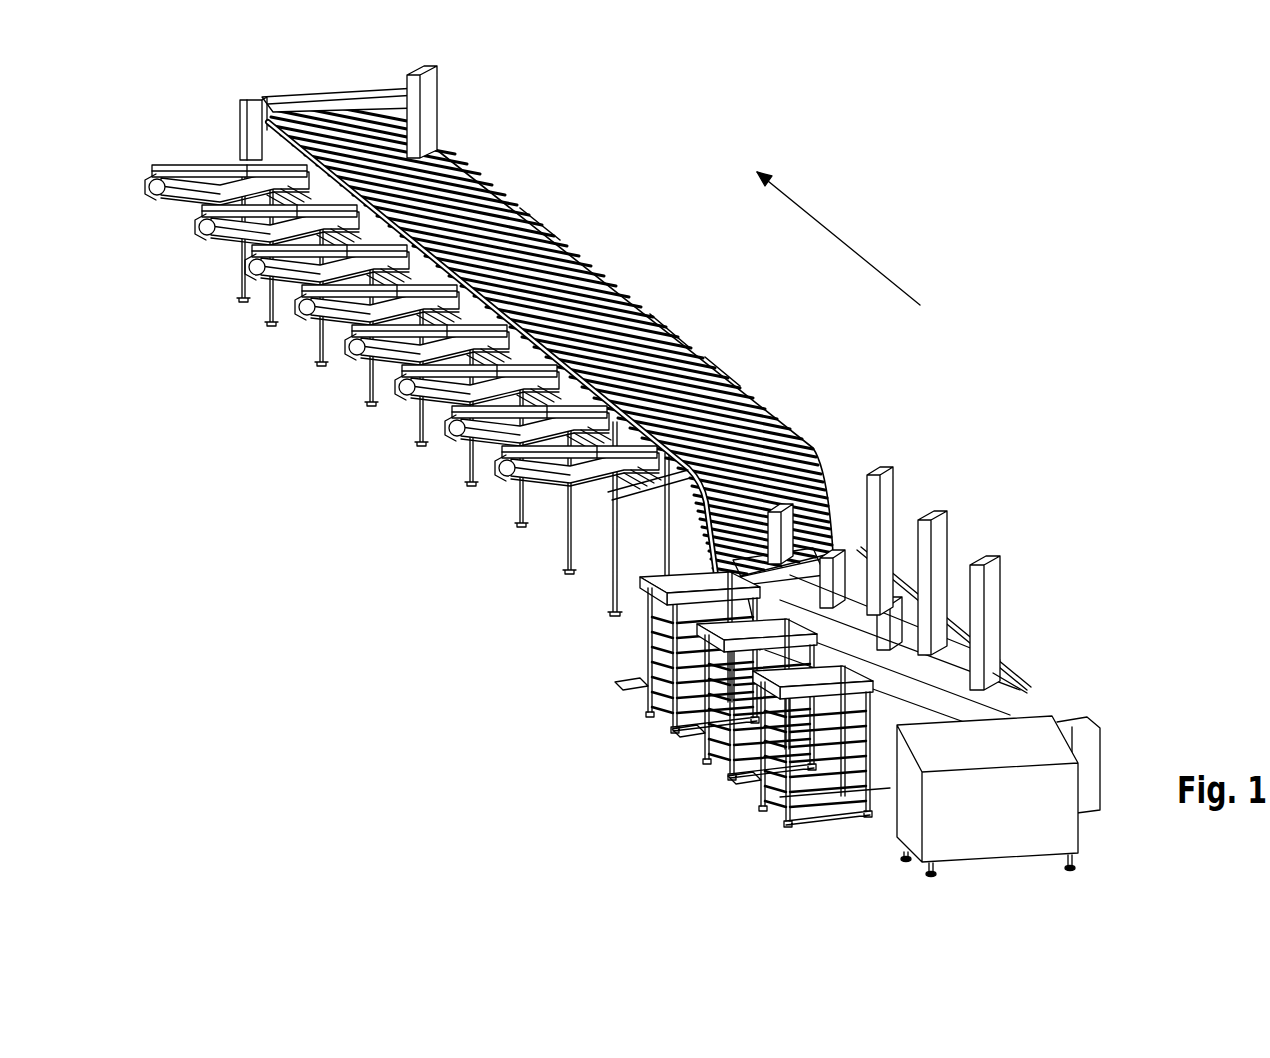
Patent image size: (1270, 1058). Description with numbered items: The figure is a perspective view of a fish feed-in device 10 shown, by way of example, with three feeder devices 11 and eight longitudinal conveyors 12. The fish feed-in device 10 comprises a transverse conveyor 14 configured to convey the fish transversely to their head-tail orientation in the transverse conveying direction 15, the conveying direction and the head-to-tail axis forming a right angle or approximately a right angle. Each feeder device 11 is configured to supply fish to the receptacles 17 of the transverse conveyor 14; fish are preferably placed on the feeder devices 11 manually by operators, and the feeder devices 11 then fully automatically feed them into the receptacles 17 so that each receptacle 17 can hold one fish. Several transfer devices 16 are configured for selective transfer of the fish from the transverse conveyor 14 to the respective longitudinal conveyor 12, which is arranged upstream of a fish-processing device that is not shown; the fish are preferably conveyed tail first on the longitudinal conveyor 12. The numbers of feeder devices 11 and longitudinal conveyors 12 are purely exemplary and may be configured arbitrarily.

The fish feed-in device 10 is at (822, 358).
The feeder device 11 is at (630, 710).
The longitudinal conveyor 12 is at (151, 196).
The transverse conveyor 14 is at (580, 257).
The transverse conveying direction 15 is at (822, 224).
The transfer device 16 is at (183, 208).
The receptacle 17 is at (537, 225).